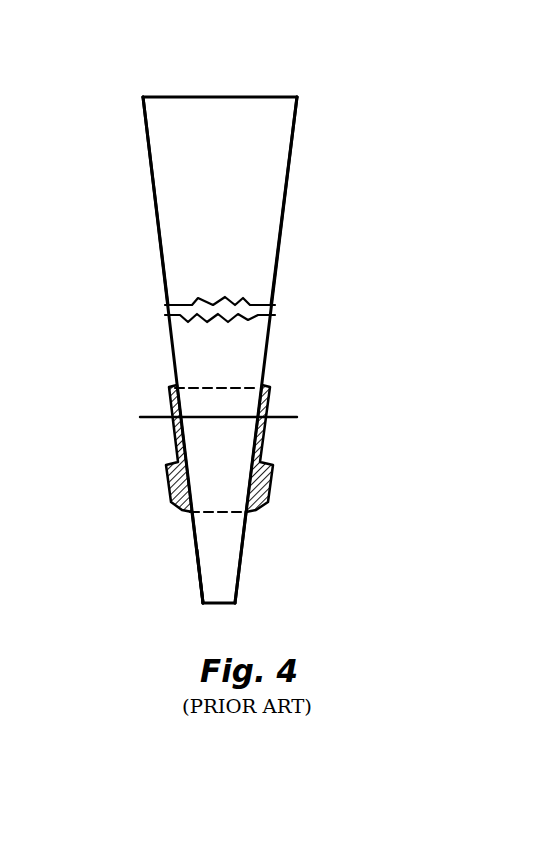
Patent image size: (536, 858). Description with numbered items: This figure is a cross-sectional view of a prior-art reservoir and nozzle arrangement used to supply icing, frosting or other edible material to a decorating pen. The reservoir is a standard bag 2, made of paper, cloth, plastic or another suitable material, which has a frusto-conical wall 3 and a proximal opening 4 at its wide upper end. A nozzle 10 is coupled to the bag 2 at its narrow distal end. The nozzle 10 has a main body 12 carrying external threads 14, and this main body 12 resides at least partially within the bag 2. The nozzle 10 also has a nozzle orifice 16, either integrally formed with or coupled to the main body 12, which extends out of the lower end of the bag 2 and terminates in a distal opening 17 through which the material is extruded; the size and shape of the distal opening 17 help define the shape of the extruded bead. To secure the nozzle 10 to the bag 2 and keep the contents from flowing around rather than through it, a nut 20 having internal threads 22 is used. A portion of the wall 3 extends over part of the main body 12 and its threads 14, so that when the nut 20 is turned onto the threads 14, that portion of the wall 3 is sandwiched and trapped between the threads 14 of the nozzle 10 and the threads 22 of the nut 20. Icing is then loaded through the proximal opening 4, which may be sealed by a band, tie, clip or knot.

The bag 2 is at (136, 219).
The frusto-conical wall 3 is at (227, 165).
The proximal opening 4 is at (212, 100).
The nozzle 10 is at (270, 537).
The main body 12 is at (210, 410).
The external threads 14 is at (260, 417).
The nozzle orifice 16 is at (210, 548).
The distal opening 17 is at (203, 603).
The nut 20 is at (267, 492).
The internal threads 22 is at (170, 483).